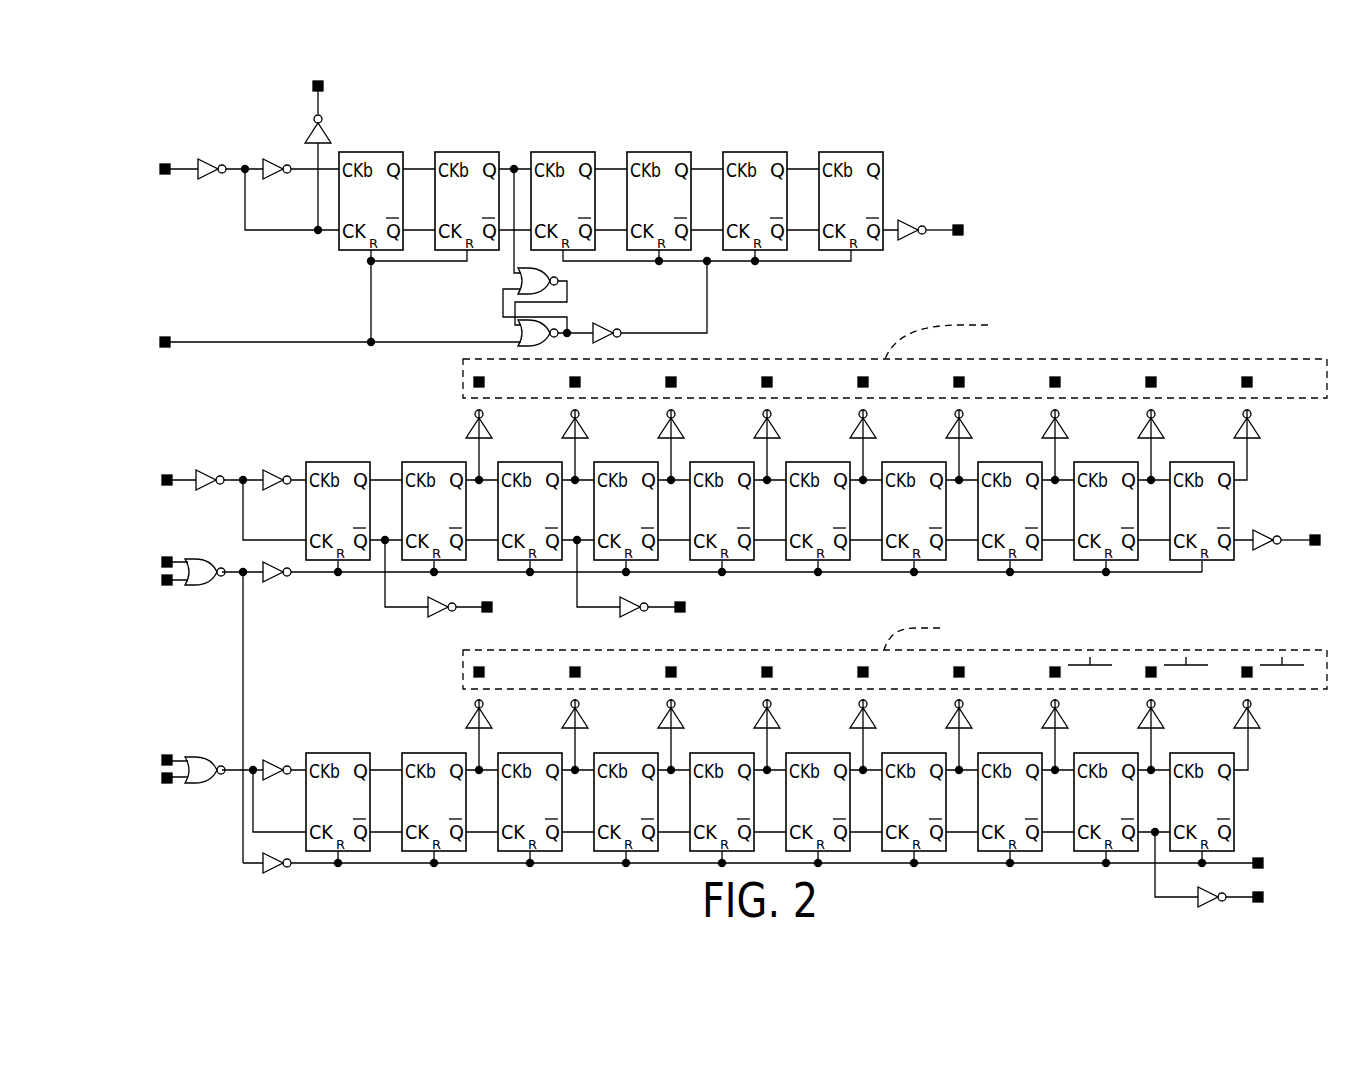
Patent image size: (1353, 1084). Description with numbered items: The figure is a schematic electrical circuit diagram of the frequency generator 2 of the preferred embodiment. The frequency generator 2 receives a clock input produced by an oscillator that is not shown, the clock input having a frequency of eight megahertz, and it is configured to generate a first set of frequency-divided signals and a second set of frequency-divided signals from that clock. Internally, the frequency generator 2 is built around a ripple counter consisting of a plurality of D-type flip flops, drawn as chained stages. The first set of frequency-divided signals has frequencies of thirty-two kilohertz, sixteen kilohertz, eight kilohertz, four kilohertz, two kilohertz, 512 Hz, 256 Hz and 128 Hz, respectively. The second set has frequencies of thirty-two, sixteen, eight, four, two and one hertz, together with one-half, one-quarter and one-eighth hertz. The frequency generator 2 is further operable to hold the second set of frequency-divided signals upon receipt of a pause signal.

The frequency generator 2 is at (1131, 229).
The 512Hz output terminal 512 is at (1081, 428).
The 256Hz output terminal 256 is at (1177, 428).
The 128Hz output terminal 128 is at (1273, 405).